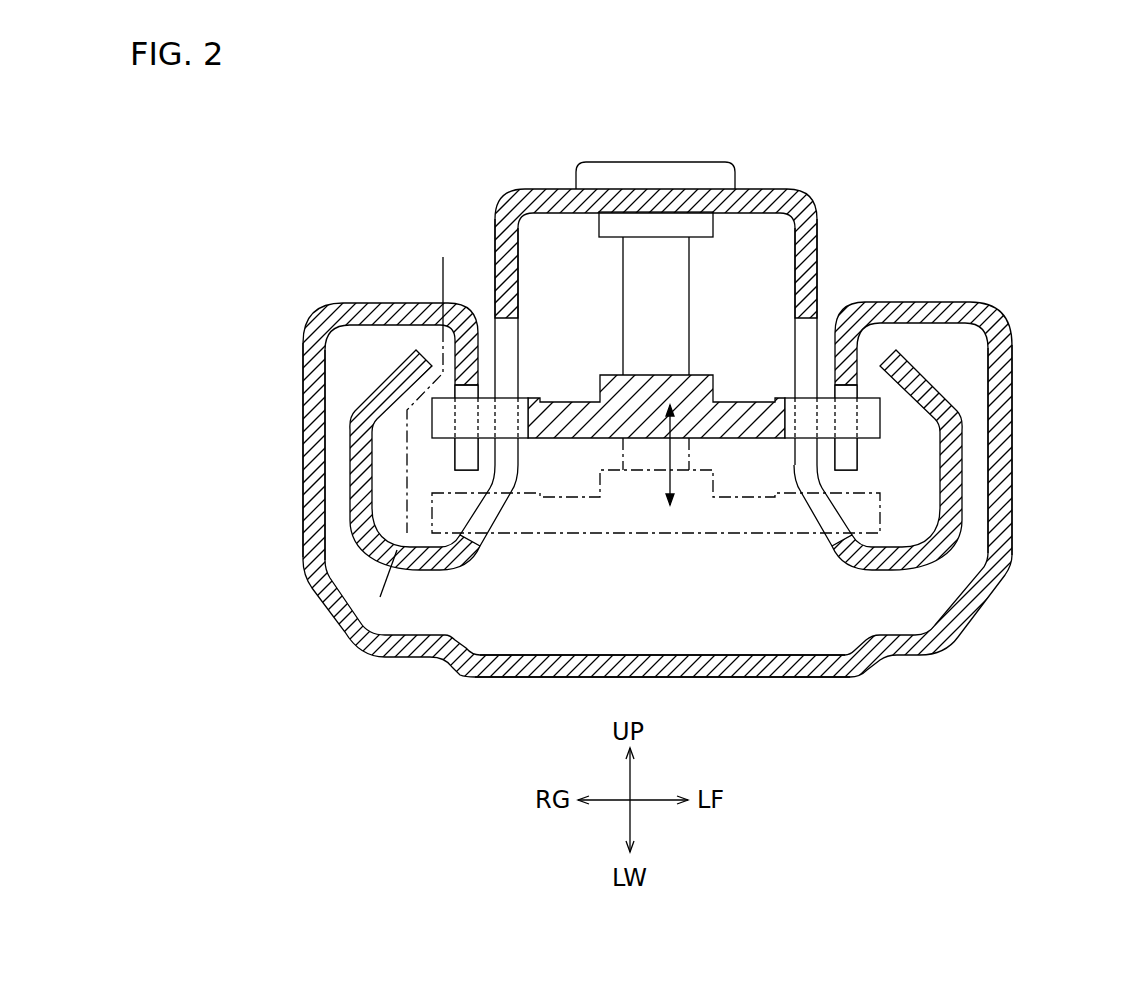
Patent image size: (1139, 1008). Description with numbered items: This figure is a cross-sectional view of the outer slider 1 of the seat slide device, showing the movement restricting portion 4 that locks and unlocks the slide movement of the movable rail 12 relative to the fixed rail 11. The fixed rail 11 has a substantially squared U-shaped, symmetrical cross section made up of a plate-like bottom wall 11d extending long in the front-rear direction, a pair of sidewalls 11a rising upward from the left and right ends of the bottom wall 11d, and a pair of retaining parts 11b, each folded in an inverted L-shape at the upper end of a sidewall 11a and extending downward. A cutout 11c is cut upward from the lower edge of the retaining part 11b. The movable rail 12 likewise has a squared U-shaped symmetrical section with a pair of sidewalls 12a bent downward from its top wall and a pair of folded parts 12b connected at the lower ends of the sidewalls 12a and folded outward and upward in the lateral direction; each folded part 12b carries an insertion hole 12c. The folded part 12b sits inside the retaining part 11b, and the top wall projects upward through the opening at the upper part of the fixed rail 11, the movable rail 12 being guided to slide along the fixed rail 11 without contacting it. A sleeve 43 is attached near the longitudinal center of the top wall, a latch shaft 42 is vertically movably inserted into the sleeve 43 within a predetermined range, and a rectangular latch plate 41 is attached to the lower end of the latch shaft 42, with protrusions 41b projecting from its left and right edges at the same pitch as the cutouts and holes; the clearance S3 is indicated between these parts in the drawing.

The outer slider 1 is at (262, 203).
The movement restricting portion 4 is at (596, 352).
The fixed rail 11 is at (569, 451).
The sidewall 11a is at (303, 458).
The retaining part 11b is at (482, 332).
The cutout 11c is at (427, 407).
The bottom wall 11d is at (487, 678).
The movable rail 12 is at (569, 420).
The sidewall 12a is at (495, 252).
The folded part 12b is at (350, 412).
The insertion hole 12c is at (513, 330).
The latch plate 41 is at (596, 486).
The protrusion 41b is at (433, 427).
The latch shaft 42 is at (622, 262).
The sleeve 43 is at (686, 160).
The clearance S3 is at (442, 270).